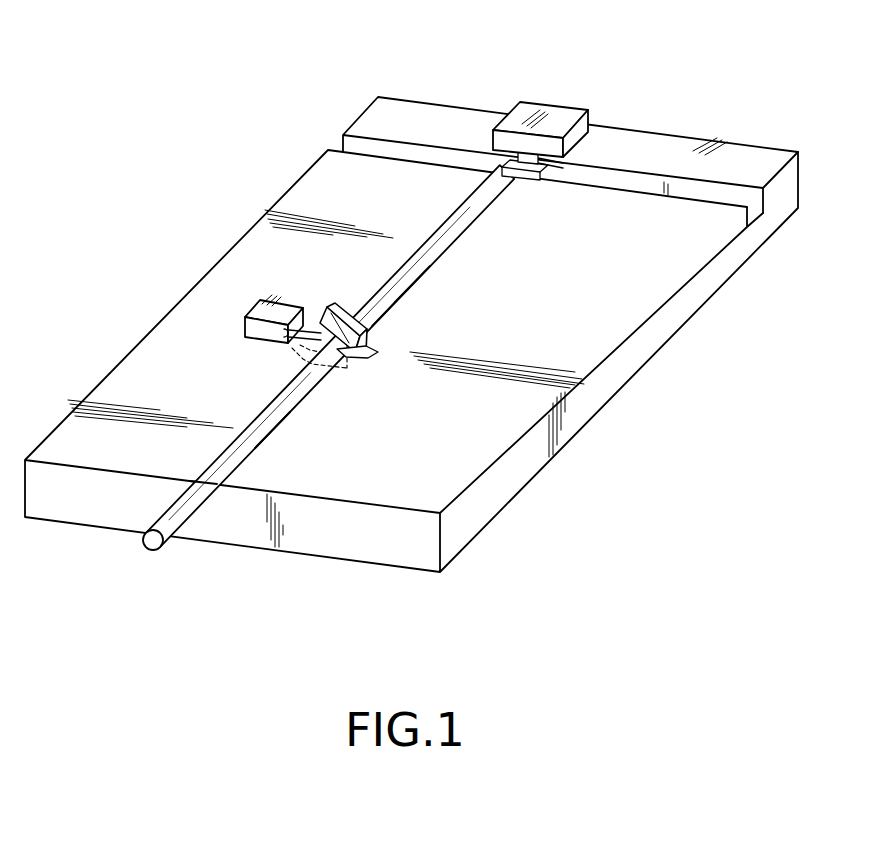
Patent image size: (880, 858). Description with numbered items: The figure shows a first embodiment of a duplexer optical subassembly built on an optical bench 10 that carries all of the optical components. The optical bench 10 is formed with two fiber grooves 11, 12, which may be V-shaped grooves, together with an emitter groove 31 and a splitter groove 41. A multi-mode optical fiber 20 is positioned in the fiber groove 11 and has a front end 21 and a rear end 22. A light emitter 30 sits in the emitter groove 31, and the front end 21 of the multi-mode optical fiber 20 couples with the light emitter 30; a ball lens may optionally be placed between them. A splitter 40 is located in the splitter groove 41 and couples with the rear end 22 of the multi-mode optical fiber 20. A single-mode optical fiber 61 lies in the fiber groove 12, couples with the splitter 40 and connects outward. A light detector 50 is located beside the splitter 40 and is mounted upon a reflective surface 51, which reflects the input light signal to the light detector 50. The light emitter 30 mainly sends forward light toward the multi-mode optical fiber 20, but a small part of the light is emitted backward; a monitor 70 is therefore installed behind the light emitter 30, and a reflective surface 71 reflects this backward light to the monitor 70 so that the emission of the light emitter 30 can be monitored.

The optical bench 10 is at (600, 383).
The fiber groove 11 is at (413, 288).
The fiber groove 12 is at (212, 494).
The multi-mode optical fiber 20 is at (425, 247).
The front end 21 is at (515, 188).
The rear end 22 is at (384, 323).
The light emitter 30 is at (505, 167).
The emitter groove 31 is at (657, 180).
The splitter 40 is at (340, 303).
The splitter groove 41 is at (366, 353).
The light detector 50 is at (263, 300).
The reflective surface 51 is at (292, 348).
The single-mode optical fiber 61 is at (273, 422).
The monitor 70 is at (548, 115).
The reflective surface 71 is at (573, 163).